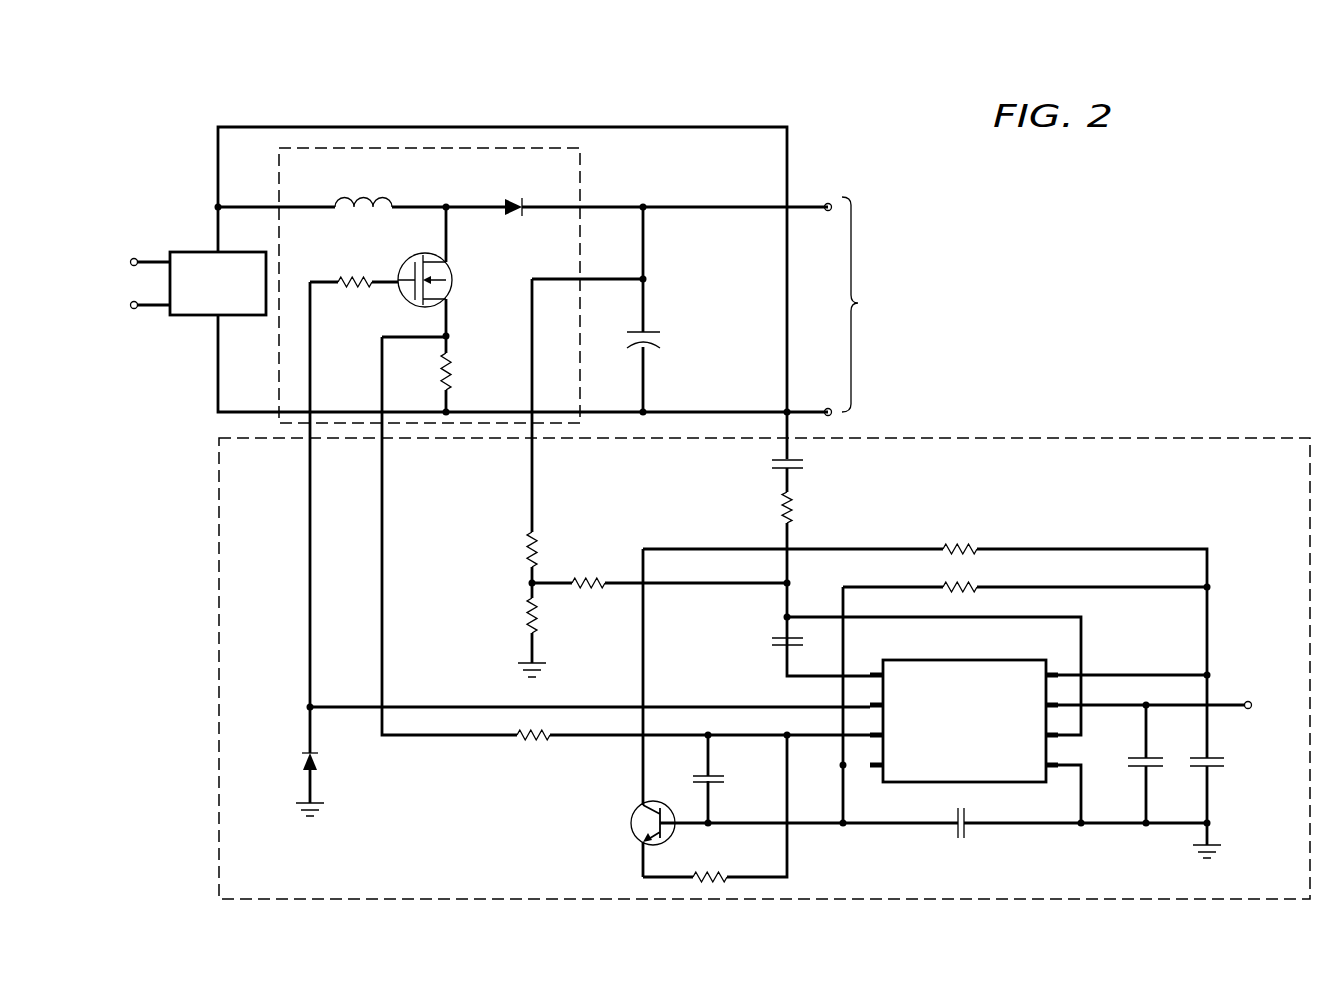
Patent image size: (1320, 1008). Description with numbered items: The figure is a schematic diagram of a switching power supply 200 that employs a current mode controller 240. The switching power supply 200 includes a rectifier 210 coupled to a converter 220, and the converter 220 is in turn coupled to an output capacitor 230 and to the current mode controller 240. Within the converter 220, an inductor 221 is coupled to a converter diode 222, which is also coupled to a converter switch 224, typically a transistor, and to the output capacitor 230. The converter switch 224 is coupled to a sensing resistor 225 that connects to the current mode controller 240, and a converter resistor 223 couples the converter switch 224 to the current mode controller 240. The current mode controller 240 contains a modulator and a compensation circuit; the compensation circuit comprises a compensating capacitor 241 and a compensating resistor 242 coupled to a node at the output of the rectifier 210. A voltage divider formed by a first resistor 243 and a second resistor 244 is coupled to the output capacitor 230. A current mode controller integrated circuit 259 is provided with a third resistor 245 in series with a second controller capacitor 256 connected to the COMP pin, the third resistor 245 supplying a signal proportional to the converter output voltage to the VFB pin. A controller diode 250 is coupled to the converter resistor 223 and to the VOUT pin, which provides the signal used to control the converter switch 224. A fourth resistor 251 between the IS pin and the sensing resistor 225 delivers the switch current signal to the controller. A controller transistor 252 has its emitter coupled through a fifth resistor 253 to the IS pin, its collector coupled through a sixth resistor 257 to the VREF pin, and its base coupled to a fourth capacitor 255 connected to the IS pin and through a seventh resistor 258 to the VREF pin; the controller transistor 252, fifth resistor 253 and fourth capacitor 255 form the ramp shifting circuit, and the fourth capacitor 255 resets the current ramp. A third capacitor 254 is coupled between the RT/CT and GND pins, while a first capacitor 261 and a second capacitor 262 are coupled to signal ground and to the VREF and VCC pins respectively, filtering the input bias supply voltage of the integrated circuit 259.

The switching power supply 200 is at (1003, 247).
The rectifier 210 is at (183, 251).
The converter 220 is at (580, 178).
The inductor 221 is at (390, 205).
The converter diode 222 is at (512, 200).
The converter resistor 223 is at (344, 277).
The converter switch 224 is at (452, 275).
The sensing resistor 225 is at (455, 373).
The output capacitor 230 is at (660, 341).
The current mode controller 240 is at (985, 436).
The compensating capacitor 241 is at (770, 464).
The compensating resistor 242 is at (778, 508).
The first resistor 243 is at (526, 541).
The second resistor 244 is at (526, 618).
The third resistor 245 is at (587, 577).
The controller diode 250 is at (318, 765).
The fourth resistor 251 is at (535, 748).
The controller transistor 252 is at (632, 826).
The fifth resistor 253 is at (708, 875).
The third capacitor 254 is at (957, 840).
The fourth capacitor 255 is at (721, 776).
The second controller capacitor 256 is at (771, 641).
The sixth resistor 257 is at (953, 545).
The seventh resistor 258 is at (970, 580).
The current mode controller integrated circuit 259 is at (922, 660).
The first capacitor 261 is at (1214, 759).
The second capacitor 262 is at (1141, 758).